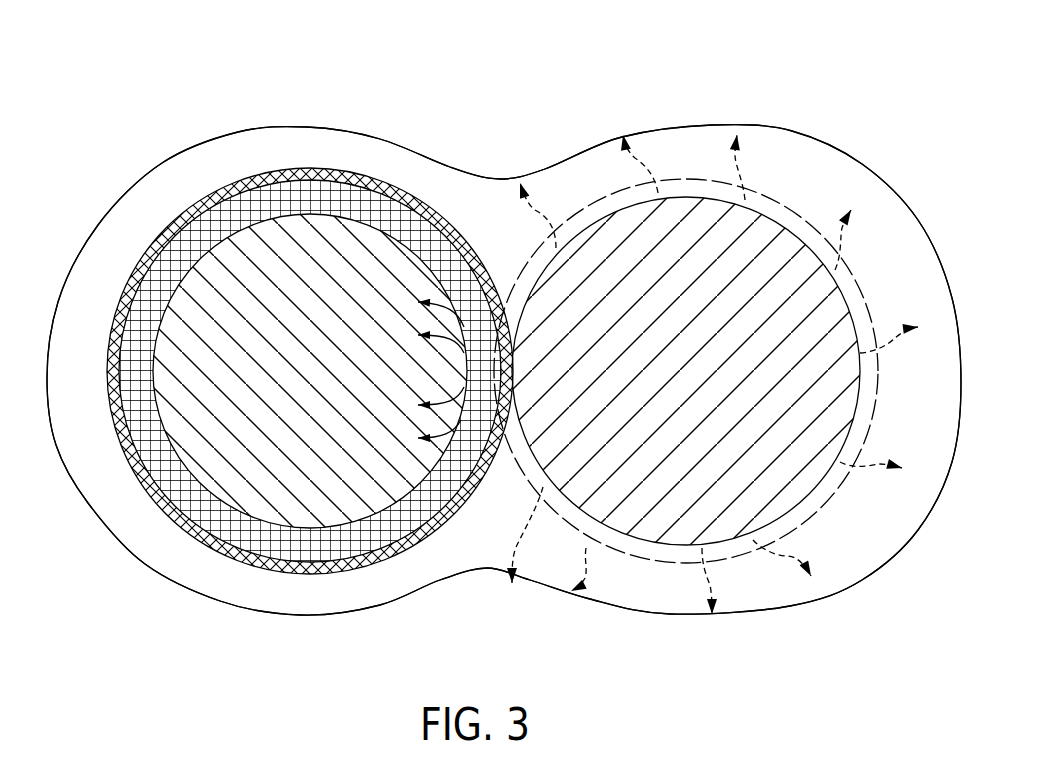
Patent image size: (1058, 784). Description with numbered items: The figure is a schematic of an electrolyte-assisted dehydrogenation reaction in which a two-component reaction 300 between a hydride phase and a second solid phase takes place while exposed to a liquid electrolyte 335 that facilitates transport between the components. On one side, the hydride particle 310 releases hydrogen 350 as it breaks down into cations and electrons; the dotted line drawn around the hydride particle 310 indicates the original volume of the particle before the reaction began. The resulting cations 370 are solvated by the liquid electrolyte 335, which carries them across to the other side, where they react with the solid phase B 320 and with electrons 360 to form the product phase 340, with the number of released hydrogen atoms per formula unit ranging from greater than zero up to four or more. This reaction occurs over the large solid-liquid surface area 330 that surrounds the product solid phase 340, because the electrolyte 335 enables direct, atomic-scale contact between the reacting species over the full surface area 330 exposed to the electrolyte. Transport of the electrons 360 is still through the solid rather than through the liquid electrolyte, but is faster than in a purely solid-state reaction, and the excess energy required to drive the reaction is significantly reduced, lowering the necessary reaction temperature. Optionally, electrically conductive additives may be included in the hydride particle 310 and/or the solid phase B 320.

The two-component reaction 300 is at (178, 95).
The AHx 310 is at (722, 523).
The B 320 is at (258, 511).
The solid-liquid surface area 330 is at (380, 185).
The liquid electrolyte 335 is at (329, 157).
The AB solid phase 340 is at (263, 203).
The hydrogen 350 is at (762, 105).
The electrons 360 is at (366, 292).
The Ax+ cations 370 is at (892, 244).